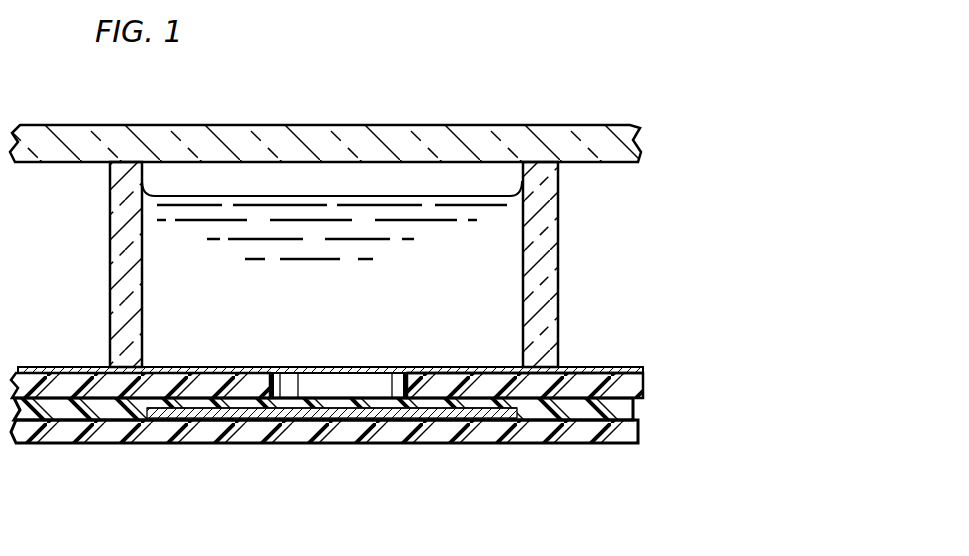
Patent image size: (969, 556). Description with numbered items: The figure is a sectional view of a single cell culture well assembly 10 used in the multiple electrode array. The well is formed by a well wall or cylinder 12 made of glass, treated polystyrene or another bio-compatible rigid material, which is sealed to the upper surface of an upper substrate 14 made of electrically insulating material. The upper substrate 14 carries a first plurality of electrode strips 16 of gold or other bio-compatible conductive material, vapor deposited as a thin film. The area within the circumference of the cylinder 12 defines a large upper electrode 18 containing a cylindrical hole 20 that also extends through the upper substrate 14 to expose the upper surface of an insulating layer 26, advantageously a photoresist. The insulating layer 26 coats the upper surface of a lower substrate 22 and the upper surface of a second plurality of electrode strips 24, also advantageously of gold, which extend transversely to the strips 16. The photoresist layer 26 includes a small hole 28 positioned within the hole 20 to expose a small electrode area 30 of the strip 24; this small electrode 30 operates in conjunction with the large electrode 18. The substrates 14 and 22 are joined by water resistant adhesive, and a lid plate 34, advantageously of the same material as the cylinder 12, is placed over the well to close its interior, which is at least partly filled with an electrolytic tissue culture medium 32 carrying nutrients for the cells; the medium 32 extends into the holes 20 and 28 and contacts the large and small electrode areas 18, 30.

The well assembly 10 is at (417, 124).
The well wall or cylinder 12 is at (548, 262).
The upper substrate 14 is at (622, 390).
The first plurality of electrode strips 16 is at (600, 366).
The large upper electrode 18 is at (448, 368).
The cylindrical hole 20 is at (383, 368).
The lower substrate 22 is at (632, 430).
The second plurality of electrode strips 24 is at (470, 410).
The insulating layer 26 is at (640, 410).
The small hole 28 is at (335, 408).
The small electrode area 30 is at (337, 418).
The electrolytic tissue culture medium 32 is at (500, 237).
The lid plate 34 is at (620, 125).